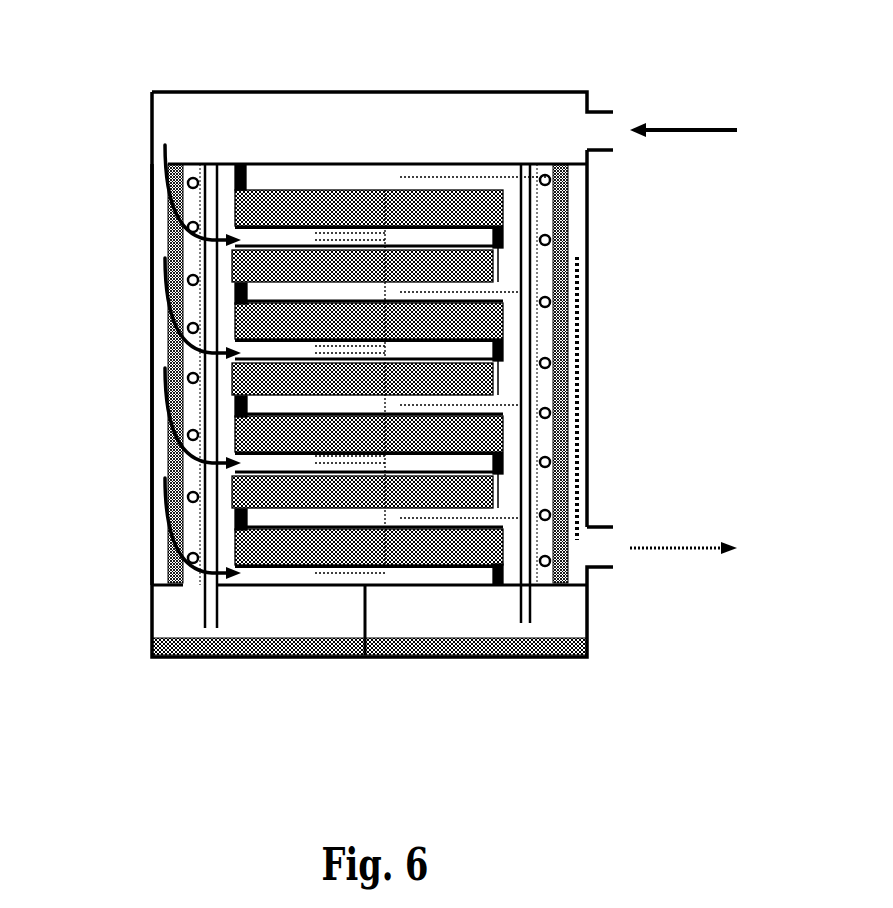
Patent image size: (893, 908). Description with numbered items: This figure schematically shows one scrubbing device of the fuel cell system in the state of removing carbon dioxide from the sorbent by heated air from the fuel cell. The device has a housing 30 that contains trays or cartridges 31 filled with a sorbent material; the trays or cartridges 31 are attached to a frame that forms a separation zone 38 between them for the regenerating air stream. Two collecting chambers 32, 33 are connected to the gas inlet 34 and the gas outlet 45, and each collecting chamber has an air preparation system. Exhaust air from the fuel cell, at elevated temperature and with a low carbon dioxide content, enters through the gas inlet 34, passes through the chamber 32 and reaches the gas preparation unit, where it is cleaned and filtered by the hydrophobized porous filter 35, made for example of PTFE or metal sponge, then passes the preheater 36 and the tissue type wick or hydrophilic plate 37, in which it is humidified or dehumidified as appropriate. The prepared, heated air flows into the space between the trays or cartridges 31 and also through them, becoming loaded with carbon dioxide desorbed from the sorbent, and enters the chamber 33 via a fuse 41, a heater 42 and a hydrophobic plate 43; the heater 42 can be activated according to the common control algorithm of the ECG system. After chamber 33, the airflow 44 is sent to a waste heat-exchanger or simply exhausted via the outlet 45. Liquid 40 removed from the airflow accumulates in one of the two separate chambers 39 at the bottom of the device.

The housing 30 is at (472, 90).
The trays or cartridges 31 is at (263, 198).
The collecting chamber 32 is at (383, 128).
The collecting chamber 33 is at (580, 192).
The gas inlet 34 is at (717, 130).
The filter 35 is at (170, 183).
The heater 36 is at (188, 168).
The hydrophilic plate 37 is at (208, 165).
The separation zone 38 is at (505, 235).
The chambers 39 is at (352, 597).
The liquid 40 is at (413, 643).
The fuse 41 is at (505, 434).
The heater 42 is at (549, 366).
The hydrophobic plate 43 is at (563, 342).
The airflow 44 is at (578, 293).
The gas outlet 45 is at (708, 536).